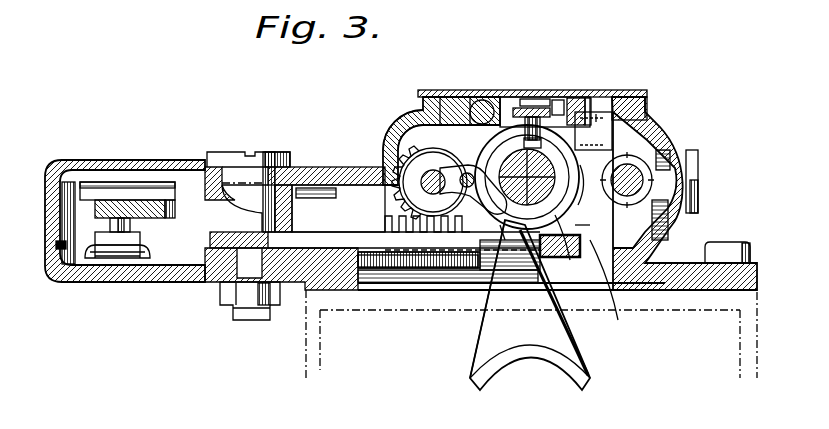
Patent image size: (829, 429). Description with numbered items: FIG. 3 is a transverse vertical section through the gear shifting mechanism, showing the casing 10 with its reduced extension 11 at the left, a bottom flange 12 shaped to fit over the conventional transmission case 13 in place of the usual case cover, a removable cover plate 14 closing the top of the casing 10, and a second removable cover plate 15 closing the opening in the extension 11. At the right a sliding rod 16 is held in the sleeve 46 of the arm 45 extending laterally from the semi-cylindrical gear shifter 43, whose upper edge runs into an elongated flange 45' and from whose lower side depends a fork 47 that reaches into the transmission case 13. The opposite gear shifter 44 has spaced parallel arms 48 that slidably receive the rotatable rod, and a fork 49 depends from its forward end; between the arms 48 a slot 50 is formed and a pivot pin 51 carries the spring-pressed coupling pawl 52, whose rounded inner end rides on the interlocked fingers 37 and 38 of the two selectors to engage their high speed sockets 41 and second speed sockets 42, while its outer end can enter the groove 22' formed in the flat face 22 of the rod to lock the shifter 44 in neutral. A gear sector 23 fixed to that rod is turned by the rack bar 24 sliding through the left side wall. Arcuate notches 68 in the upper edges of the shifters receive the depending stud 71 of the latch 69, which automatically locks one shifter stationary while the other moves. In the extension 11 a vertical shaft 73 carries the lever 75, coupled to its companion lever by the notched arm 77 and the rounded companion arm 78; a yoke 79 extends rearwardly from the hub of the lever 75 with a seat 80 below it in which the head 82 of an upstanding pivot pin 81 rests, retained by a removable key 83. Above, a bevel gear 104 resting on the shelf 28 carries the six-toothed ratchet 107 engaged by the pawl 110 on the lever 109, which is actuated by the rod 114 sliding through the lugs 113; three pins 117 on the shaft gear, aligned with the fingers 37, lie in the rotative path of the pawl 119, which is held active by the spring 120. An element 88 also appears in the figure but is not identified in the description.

The casing 10 is at (655, 140).
The reduced extension 11 is at (78, 283).
The bottom flange 12 is at (728, 262).
The transmission case 13 is at (310, 352).
The removable cover plate 14 is at (614, 96).
The removable cover plate 15 is at (150, 160).
The rod 16 is at (698, 192).
The flat face 22 is at (462, 264).
The circumferentially extending groove 22' is at (371, 196).
The gear sector 23 is at (430, 250).
The rack bar 24 is at (400, 270).
The shelf 28 is at (593, 131).
The fingers 37 is at (577, 200).
The fingers 38 is at (565, 257).
The high speed sockets 41 is at (528, 240).
The second speed sockets 42 is at (582, 229).
The gear shifter 43 is at (618, 318).
The gear shifter 44 is at (516, 248).
The arm 45 is at (627, 172).
The elongated flange 45' is at (599, 79).
The sleeve 46 is at (636, 170).
The fork 47 is at (546, 245).
The spaced parallel arms 48 is at (390, 150).
The fork 49 is at (545, 355).
The slot 50 is at (450, 160).
The pivot pin 51 is at (428, 233).
The coupling pawl 52 is at (470, 258).
The arcuate notches 68 is at (465, 100).
The latch 69 is at (560, 100).
The depending stud 71 is at (540, 117).
The shaft 73 is at (262, 155).
The lever 75 is at (335, 232).
The arm 77 is at (398, 170).
The companion arm 78 is at (224, 292).
The yoke 79 is at (90, 182).
The seat 80 is at (138, 238).
The pivot pin 81 is at (56, 247).
The head 82 is at (112, 258).
The removable key 83 is at (138, 258).
The block 88 is at (160, 200).
The bevel gear 104 is at (592, 79).
The ratchet 107 is at (526, 108).
The lever 109 is at (536, 99).
The pawl 110 is at (640, 107).
The spaced lugs 113 is at (454, 96).
The rod 114 is at (486, 100).
The laterally projecting pins 117 is at (600, 110).
The pawl 119 is at (417, 120).
The spring 120 is at (397, 132).